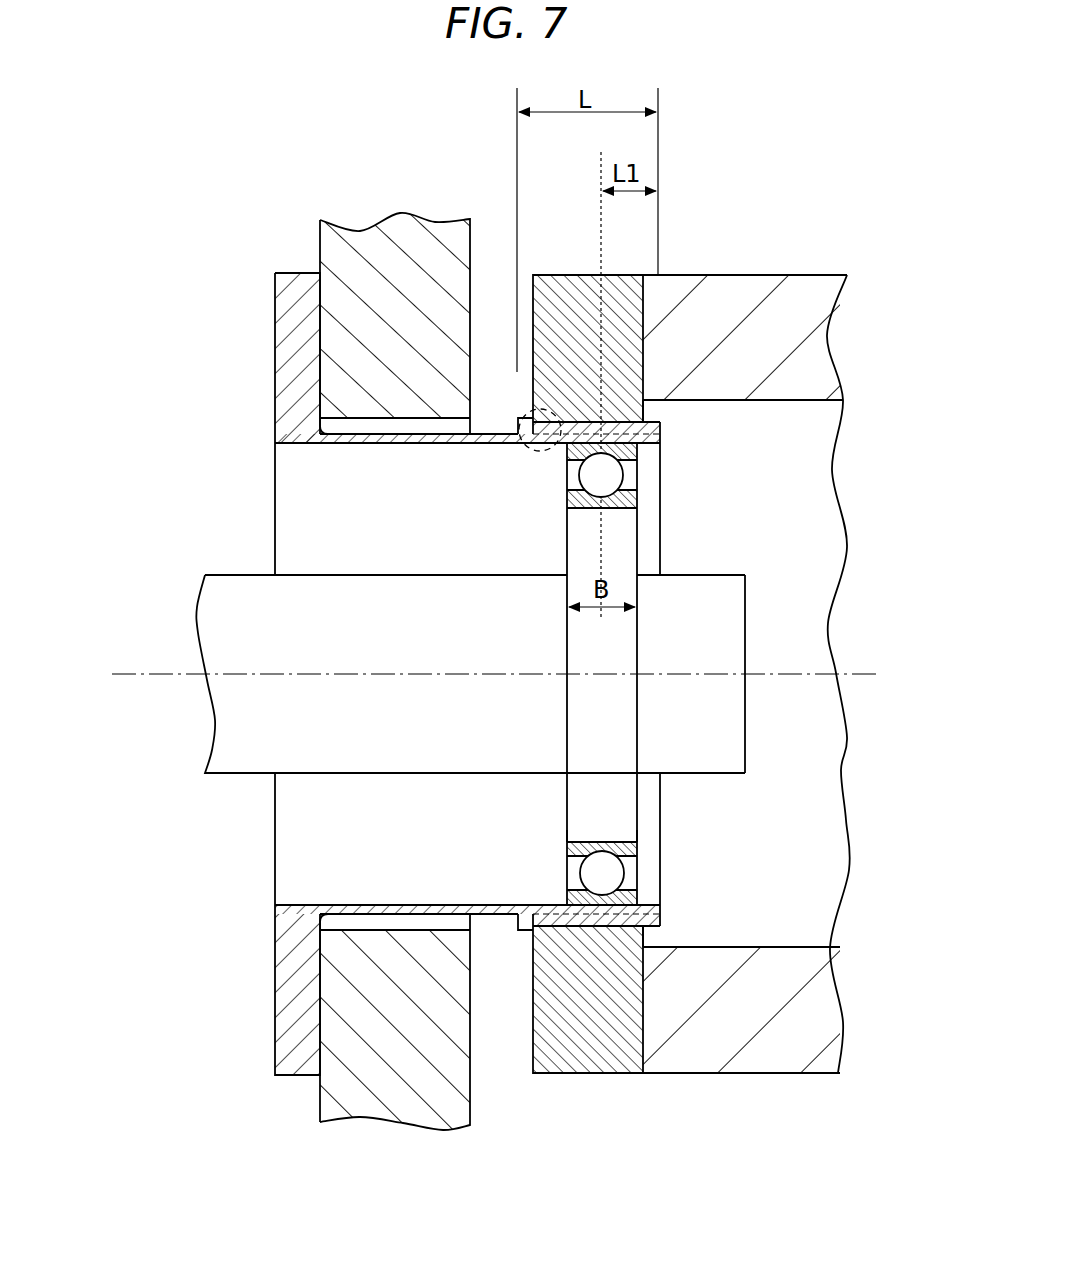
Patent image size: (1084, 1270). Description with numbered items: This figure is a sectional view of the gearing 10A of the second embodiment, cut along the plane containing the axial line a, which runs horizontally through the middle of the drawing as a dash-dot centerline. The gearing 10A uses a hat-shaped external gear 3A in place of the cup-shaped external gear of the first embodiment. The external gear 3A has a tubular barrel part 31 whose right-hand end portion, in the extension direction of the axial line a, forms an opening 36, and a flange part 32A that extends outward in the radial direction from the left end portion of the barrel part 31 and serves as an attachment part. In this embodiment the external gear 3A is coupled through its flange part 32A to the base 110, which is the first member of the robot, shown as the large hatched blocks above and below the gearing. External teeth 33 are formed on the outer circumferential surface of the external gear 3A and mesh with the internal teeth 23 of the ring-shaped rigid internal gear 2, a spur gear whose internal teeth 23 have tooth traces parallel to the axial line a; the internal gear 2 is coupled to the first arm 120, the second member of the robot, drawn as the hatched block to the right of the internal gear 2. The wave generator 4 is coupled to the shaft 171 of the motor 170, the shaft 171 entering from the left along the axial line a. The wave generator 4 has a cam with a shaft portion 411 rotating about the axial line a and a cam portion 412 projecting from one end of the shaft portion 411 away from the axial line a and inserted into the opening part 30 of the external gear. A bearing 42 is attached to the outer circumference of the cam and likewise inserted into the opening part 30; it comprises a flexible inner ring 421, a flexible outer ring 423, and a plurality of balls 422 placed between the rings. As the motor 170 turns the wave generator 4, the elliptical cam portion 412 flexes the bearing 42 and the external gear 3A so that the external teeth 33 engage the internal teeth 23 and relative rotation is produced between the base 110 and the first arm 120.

The gearing 10A is at (812, 198).
The base 110 is at (400, 233).
The first arm 120 is at (745, 285).
The internal gear 2 is at (584, 268).
The external gear 3A is at (268, 370).
The external teeth 33 is at (560, 418).
The internal teeth 23 is at (520, 410).
The opening 36 is at (660, 458).
The opening part 30 is at (650, 490).
The barrel part 31 is at (492, 914).
The flange part 32A is at (285, 962).
The motor 170 is at (208, 568).
The shaft 171 is at (247, 590).
The wave generator 4 is at (722, 569).
The axial line a is at (128, 668).
The shaft portion 411 is at (693, 775).
The cam portion 412 is at (638, 825).
The bearing 42 is at (685, 885).
The inner ring 421 is at (638, 849).
The balls 422 is at (617, 877).
The outer ring 423 is at (630, 894).